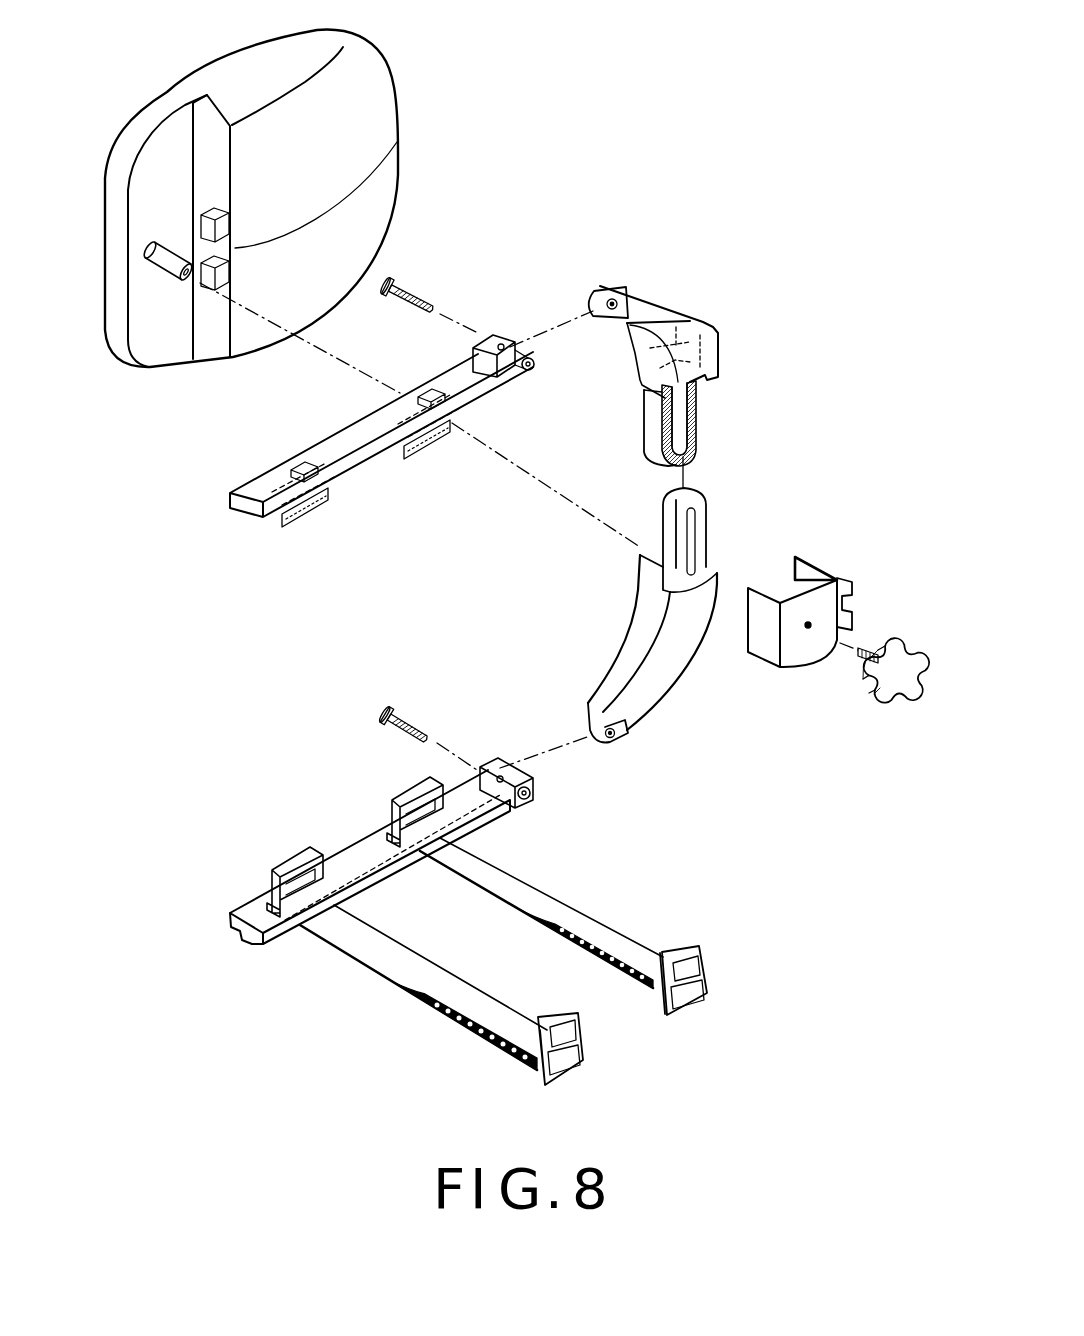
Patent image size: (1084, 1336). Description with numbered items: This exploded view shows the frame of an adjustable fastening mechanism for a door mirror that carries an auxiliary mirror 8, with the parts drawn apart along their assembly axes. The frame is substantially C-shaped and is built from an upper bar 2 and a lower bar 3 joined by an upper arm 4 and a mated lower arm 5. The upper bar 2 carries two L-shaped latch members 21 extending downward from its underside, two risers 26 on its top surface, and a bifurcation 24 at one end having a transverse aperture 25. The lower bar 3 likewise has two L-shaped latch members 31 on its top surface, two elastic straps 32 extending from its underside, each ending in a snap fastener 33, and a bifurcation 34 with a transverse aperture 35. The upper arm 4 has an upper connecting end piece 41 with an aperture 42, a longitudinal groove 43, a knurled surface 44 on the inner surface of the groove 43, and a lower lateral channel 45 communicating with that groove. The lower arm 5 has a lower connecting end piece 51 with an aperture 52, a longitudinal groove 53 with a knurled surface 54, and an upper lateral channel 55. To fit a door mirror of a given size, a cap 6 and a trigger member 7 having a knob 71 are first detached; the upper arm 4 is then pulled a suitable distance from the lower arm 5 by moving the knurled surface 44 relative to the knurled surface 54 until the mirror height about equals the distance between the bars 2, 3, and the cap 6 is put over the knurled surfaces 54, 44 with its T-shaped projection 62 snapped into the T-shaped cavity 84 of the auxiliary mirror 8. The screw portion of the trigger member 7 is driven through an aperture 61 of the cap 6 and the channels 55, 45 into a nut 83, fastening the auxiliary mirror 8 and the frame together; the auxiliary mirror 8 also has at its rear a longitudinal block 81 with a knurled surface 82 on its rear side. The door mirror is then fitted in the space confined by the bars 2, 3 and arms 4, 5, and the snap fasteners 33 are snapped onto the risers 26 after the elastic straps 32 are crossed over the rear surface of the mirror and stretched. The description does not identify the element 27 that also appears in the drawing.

The upper bar 2 is at (232, 505).
The lower bar 3 is at (232, 920).
The upper arm 4 is at (687, 323).
The lower arm 5 is at (680, 660).
The cap 6 is at (793, 648).
The trigger member 7 is at (865, 647).
The auxiliary mirror 8 is at (384, 81).
The L-shaped latch members 21 is at (303, 520).
The bifurcation 24 is at (513, 343).
The transverse aperture 25 is at (531, 372).
The risers 26 is at (302, 466).
The bolt 27 is at (413, 290).
The L-shaped latch members 31 is at (290, 862).
The elastic straps 32 is at (517, 893).
The snap fasteners 33 is at (700, 948).
The bifurcation 34 is at (503, 778).
The transverse aperture 35 is at (533, 800).
The upper connecting end piece 41 is at (597, 283).
The aperture 42 is at (620, 308).
The longitudinal groove 43 is at (645, 415).
The knurled surface 44 is at (698, 420).
The lower lateral channel 45 is at (677, 443).
The lower connecting end piece 51 is at (618, 737).
The aperture 52 is at (615, 743).
The longitudinal groove 53 is at (703, 503).
The knurled surface 54 is at (655, 548).
The upper lateral channel 55 is at (693, 540).
The aperture 61 is at (808, 630).
The T-shaped projection 62 is at (848, 587).
The knob 71 is at (907, 677).
The longitudinal block 81 is at (160, 268).
The knurled surface 82 is at (184, 278).
The nut 83 is at (198, 280).
The T-shaped cavity 84 is at (223, 255).